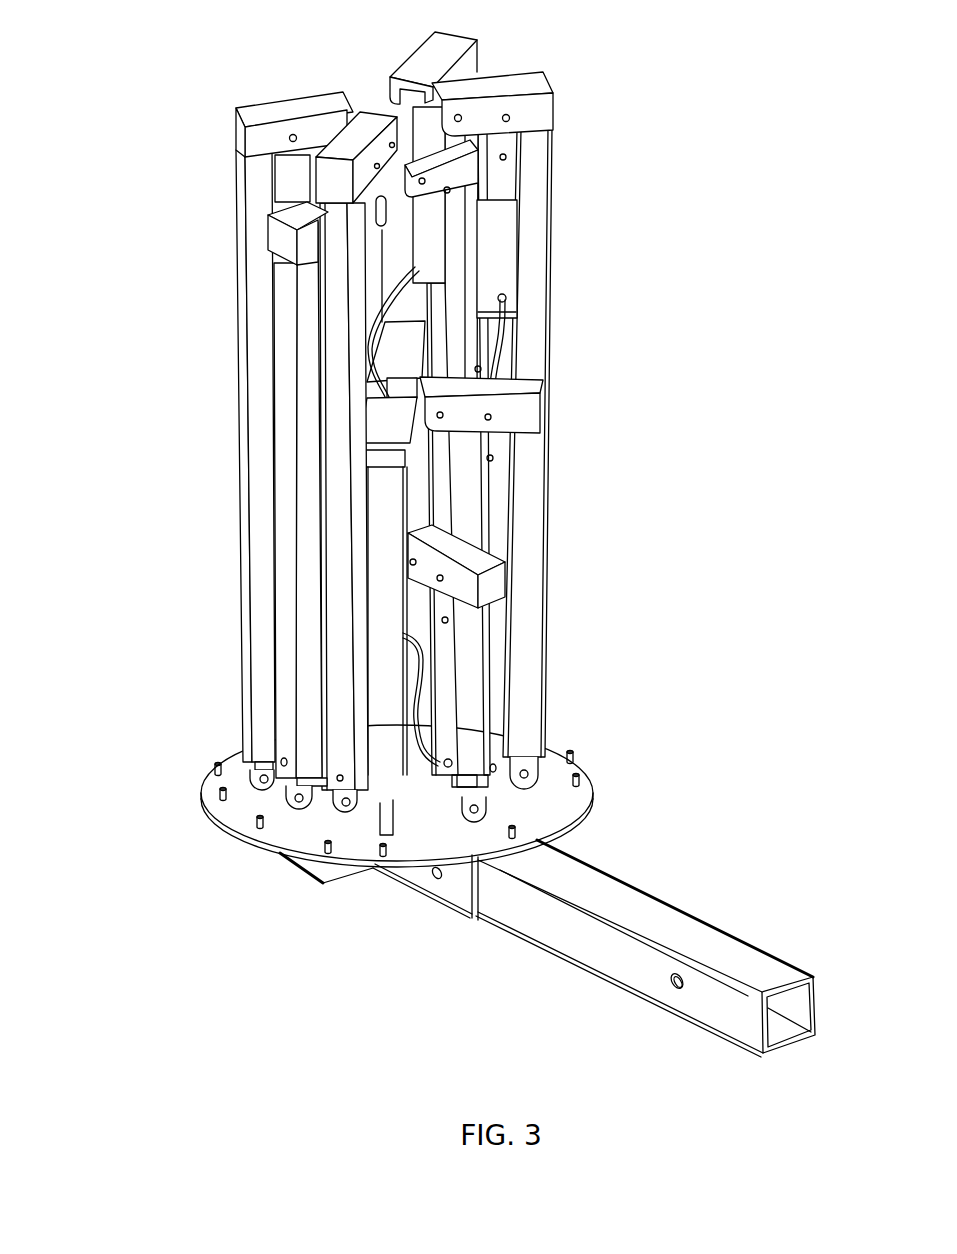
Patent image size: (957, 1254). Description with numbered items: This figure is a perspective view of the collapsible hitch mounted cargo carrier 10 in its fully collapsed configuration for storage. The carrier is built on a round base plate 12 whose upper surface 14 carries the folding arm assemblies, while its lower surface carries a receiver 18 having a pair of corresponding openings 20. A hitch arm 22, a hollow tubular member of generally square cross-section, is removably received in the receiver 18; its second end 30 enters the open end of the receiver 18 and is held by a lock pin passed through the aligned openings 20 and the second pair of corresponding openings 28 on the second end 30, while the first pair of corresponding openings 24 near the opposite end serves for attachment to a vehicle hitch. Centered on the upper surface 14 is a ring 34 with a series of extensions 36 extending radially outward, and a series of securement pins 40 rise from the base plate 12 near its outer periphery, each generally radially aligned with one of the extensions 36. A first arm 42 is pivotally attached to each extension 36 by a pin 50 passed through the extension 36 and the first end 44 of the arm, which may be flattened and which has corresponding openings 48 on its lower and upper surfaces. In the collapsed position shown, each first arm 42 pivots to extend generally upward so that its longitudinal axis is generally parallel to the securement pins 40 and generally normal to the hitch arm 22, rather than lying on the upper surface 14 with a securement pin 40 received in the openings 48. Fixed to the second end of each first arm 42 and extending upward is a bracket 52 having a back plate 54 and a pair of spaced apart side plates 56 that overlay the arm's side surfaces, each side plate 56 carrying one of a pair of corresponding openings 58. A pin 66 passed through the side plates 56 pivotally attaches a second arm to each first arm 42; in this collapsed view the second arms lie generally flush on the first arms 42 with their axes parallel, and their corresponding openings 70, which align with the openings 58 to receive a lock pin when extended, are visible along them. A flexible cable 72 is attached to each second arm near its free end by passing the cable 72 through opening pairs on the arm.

The collapsible hitch mounted cargo carrier 10 is at (114, 360).
The base plate 12 is at (212, 731).
The upper surface 14 is at (243, 836).
The receiver 18 is at (445, 893).
The openings 20 is at (430, 871).
The hitch arm 22 is at (694, 892).
The first pair of corresponding openings 24 is at (437, 880).
The second pair of corresponding openings 28 is at (675, 990).
The second end 30 is at (786, 974).
The ring 34 is at (427, 805).
The extensions 36 is at (527, 787).
The securement pins 40 is at (575, 748).
The first arm 42 is at (530, 547).
The first end 44 is at (280, 237).
The openings 48 is at (283, 757).
The pin 50 is at (529, 776).
The bracket 52 is at (274, 88).
The back plate 54 is at (518, 82).
The side plates 56 is at (548, 116).
The openings 58 is at (458, 116).
The pin 66 is at (509, 119).
The openings 70 is at (492, 458).
The flexible cable 72 is at (500, 340).